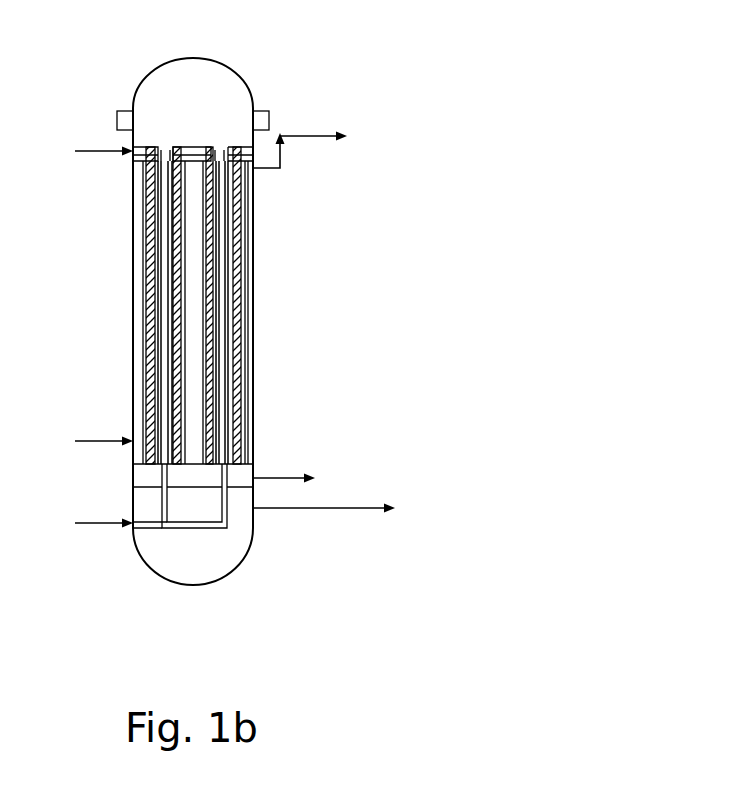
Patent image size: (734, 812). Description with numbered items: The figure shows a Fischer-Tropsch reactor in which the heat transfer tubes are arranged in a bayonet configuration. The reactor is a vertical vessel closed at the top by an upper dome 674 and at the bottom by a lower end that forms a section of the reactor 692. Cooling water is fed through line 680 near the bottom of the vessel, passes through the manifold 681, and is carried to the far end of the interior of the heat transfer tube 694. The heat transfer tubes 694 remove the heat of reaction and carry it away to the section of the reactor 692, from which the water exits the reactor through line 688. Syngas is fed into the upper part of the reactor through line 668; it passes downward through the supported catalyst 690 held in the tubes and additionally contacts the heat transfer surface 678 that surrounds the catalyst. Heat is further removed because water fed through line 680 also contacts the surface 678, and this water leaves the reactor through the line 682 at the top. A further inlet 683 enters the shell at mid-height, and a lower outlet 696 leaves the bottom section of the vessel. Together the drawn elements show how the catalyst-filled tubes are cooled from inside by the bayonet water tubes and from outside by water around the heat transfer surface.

The upper dome of reactor vessel 674 is at (150, 73).
The line 668 is at (97, 150).
The line 682 is at (305, 134).
The heat transfer surface 678 is at (245, 222).
The supported catalyst 690 is at (245, 288).
The heat transfer tube 694 is at (243, 465).
The coolant inlet 683 is at (90, 441).
The line 680 is at (90, 523).
The line 688 is at (300, 478).
The lower outlet 696 is at (340, 508).
The manifold 681 is at (228, 512).
The section of the reactor 692 is at (188, 570).